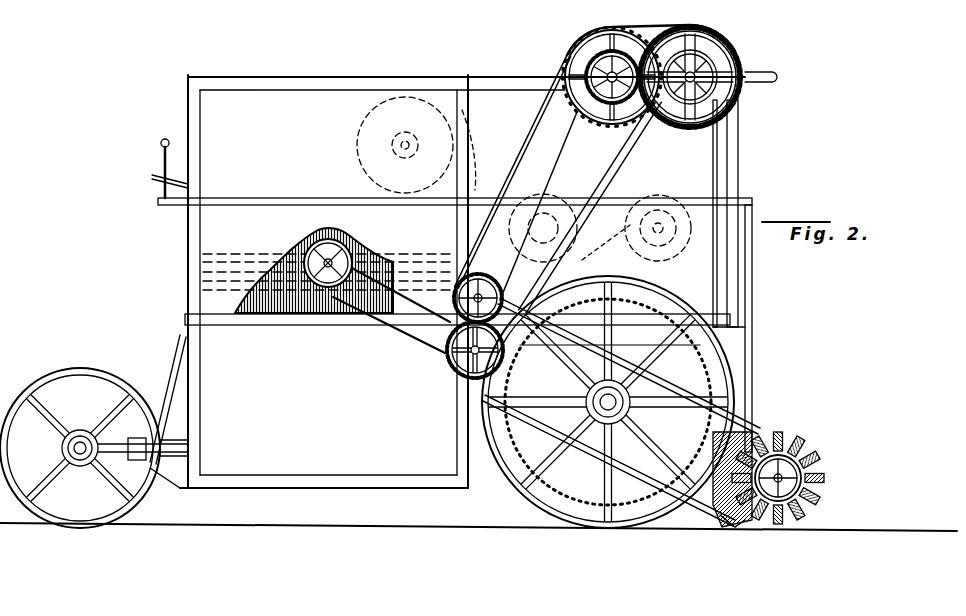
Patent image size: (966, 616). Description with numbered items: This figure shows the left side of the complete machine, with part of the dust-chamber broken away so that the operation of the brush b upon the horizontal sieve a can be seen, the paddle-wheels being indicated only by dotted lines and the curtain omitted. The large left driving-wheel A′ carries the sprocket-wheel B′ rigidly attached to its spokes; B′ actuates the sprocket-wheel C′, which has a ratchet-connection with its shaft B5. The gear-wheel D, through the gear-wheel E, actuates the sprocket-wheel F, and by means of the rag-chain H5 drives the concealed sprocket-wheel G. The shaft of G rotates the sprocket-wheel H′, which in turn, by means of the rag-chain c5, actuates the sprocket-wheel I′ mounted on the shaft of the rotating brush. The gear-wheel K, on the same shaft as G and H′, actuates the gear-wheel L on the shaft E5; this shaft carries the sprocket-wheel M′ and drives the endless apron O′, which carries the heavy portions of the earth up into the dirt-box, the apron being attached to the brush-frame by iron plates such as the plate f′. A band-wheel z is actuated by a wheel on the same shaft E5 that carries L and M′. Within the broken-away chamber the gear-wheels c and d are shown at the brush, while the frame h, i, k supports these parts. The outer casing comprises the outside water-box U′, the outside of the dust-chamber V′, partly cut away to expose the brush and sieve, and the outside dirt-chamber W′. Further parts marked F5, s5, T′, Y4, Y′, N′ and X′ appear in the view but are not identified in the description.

The outside of the dust-chamber V′ is at (328, 144).
The outside dirt-chamber W′ is at (328, 340).
The gear-wheel E is at (587, 70).
The sprocket-wheel F is at (580, 120).
The pinion on pulley shaft F5 is at (598, 64).
The sprocket-wheel C′ is at (683, 52).
The shaft B5 is at (720, 50).
The gear-wheel D is at (761, 76).
The rag-chain H5 is at (530, 124).
The guide s5 is at (477, 150).
The roller T′ is at (543, 228).
The outside water-box U′ is at (606, 245).
The sprocket-wheel G is at (470, 284).
The gear-wheel K is at (482, 288).
The sprocket-wheel H′ is at (492, 286).
The sprocket-wheel M′ is at (462, 372).
The gear-wheel L is at (455, 362).
The shaft E5 is at (450, 354).
The gear-wheel d is at (300, 253).
The gear-wheel c is at (338, 240).
The band-wheel z is at (356, 246).
The frame h is at (212, 257).
The frame i is at (216, 268).
The horizontal sieve a is at (240, 281).
The brush b is at (238, 291).
The frame k is at (205, 320).
The frame rail Y4 is at (192, 328).
The sprocket-wheel B′ is at (560, 512).
The left driving-wheel A′ is at (604, 524).
The endless apron O′ is at (600, 428).
The bar Y′ is at (621, 412).
The rag-chain c5 is at (610, 344).
The bracket N′ is at (720, 528).
The iron plate f′ is at (735, 528).
The sprocket-wheel I′ is at (800, 457).
The paddle blades X′ is at (790, 478).